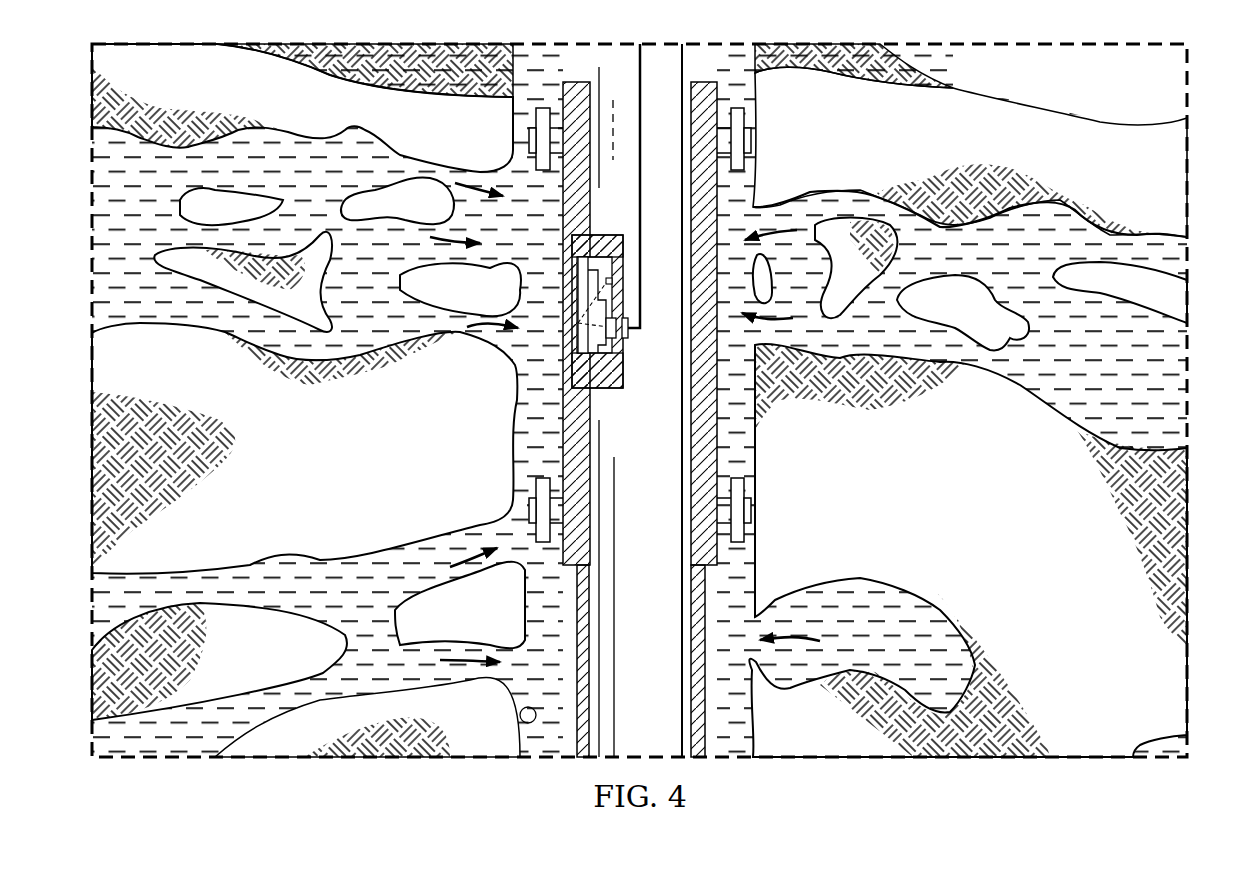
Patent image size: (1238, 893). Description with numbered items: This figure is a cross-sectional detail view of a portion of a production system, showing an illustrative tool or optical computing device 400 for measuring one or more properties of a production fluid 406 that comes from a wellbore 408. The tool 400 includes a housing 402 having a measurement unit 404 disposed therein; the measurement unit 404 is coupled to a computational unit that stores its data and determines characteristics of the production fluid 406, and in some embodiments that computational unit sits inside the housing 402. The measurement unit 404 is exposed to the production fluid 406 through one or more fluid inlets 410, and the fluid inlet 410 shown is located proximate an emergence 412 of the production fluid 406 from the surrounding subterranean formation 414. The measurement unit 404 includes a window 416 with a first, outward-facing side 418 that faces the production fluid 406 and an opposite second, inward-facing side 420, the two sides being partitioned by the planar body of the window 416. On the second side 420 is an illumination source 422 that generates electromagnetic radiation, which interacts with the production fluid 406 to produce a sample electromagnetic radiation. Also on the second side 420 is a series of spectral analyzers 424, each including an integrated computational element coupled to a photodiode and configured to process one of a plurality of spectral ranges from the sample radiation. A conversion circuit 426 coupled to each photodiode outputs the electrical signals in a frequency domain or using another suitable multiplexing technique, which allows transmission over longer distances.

The tool 400 is at (722, 91).
The housing 402 is at (720, 437).
The measurement unit 404 is at (630, 452).
The production fluid 406 is at (395, 316).
The wellbore 408 is at (520, 705).
The fluid inlet 410 is at (565, 345).
The emergence 412 is at (473, 183).
The subterranean formation 414 is at (320, 466).
The window 416 is at (572, 312).
The first, outward-facing side 418 is at (572, 262).
The second, inward-facing side 420 is at (585, 382).
The illumination source 422 is at (588, 268).
The series of spectral analyzers 424 is at (610, 340).
The conversion circuit 426 is at (630, 338).